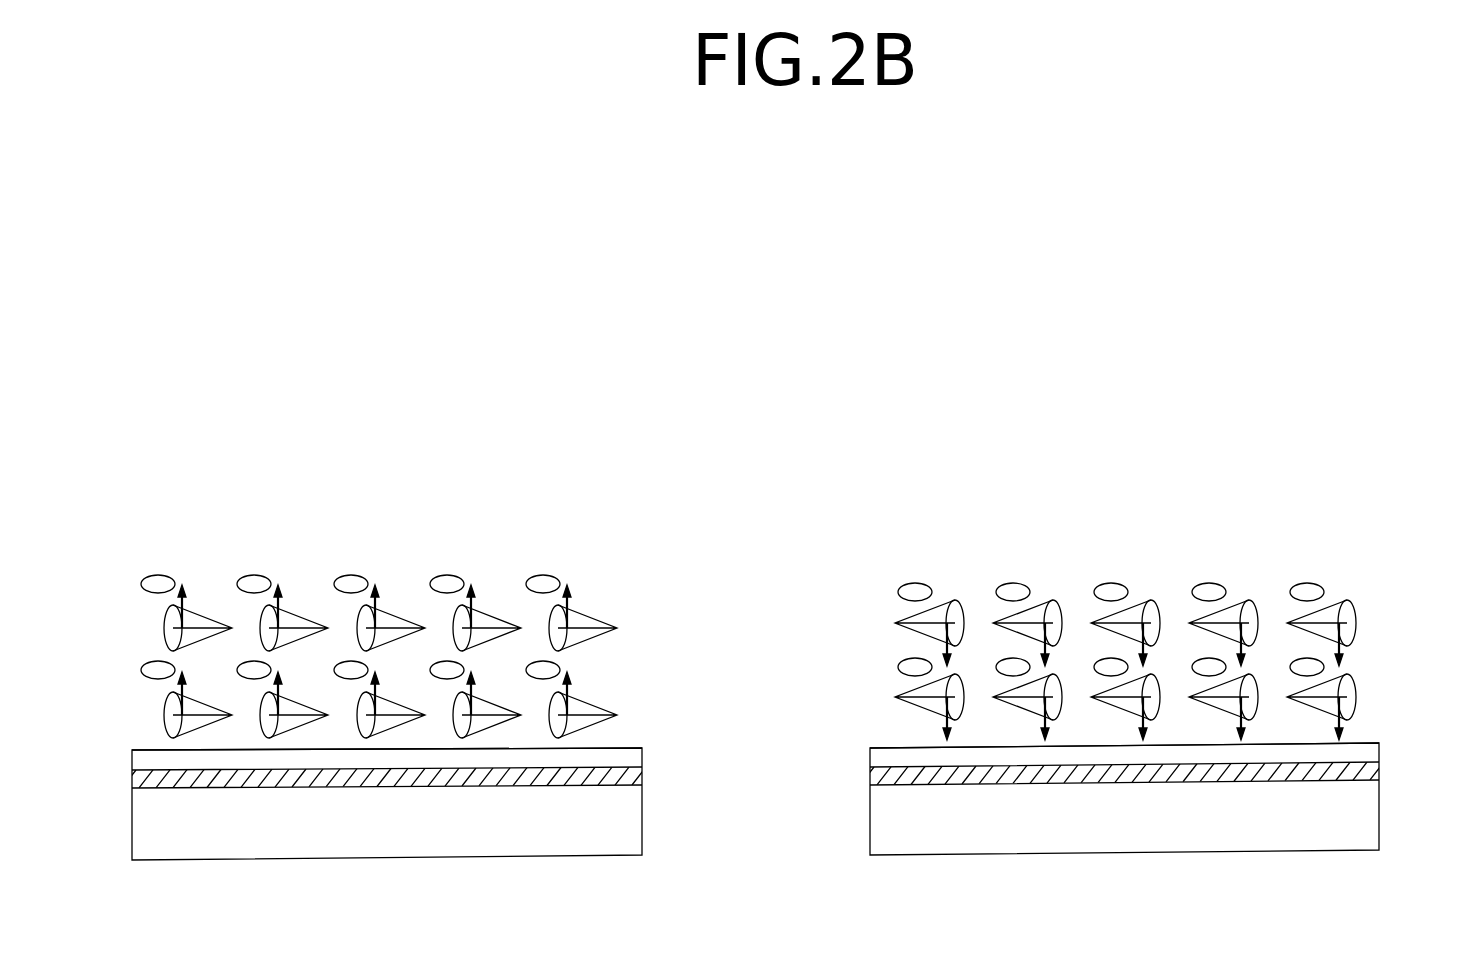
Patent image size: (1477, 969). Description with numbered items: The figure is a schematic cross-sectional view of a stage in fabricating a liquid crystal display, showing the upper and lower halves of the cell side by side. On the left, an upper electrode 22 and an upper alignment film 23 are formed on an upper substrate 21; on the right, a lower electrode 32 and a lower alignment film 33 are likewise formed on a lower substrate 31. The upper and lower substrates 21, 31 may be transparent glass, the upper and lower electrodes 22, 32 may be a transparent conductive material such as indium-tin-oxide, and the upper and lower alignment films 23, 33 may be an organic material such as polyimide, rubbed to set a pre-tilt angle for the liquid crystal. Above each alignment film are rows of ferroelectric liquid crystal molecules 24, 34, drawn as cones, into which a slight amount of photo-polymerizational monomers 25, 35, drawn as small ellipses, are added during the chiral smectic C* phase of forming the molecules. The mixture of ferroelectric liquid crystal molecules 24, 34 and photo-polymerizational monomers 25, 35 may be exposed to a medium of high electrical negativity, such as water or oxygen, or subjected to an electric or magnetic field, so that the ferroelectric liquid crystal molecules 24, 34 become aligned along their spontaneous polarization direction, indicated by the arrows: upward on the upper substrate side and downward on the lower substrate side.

The upper substrate 21 is at (642, 828).
The upper electrode 22 is at (642, 775).
The upper alignment film 23 is at (642, 755).
The ferroelectric liquid crystal molecules 24 is at (578, 622).
The photo-polymerizational monomers 25 is at (553, 576).
The lower substrate 31 is at (1379, 825).
The lower electrode 32 is at (1379, 770).
The lower alignment film 33 is at (1379, 748).
The ferroelectric liquid crystal molecules 34 is at (1222, 618).
The photo-polymerizational monomers 35 is at (1322, 580).